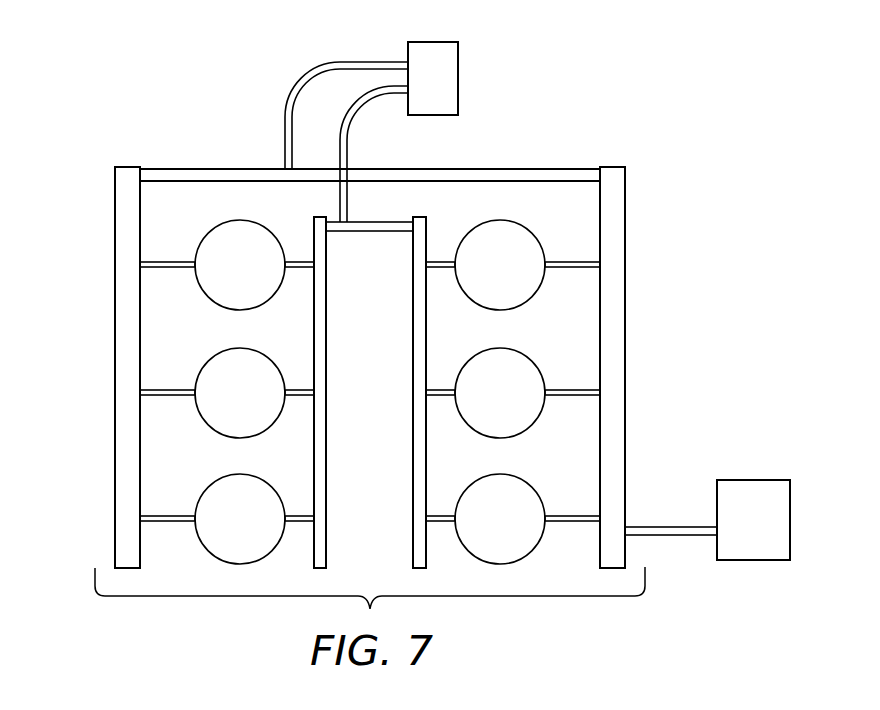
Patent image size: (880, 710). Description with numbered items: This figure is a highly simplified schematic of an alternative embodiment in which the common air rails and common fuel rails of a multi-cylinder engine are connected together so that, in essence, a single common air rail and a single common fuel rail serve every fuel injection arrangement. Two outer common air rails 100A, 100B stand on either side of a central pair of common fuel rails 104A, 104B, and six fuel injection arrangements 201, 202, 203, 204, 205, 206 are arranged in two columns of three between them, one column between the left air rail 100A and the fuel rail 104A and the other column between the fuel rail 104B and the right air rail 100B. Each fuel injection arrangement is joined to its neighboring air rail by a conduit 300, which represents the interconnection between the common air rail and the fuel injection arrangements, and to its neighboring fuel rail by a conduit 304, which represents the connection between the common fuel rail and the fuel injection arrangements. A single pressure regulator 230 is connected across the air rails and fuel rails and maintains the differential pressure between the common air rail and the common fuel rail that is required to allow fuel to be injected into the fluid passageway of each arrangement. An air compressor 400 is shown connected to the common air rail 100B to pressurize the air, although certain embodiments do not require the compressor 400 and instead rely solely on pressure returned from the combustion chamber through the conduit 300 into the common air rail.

The common air rail 100A is at (122, 312).
The common air rail 100B is at (625, 270).
The common fuel rail 104A is at (318, 423).
The common fuel rail 104B is at (411, 305).
The fuel injection arrangement 201 is at (258, 279).
The fuel injection arrangement 202 is at (258, 407).
The fuel injection arrangement 203 is at (258, 533).
The fuel injection arrangement 204 is at (518, 279).
The fuel injection arrangement 205 is at (518, 407).
The fuel injection arrangement 206 is at (518, 533).
The pressure regulator 230 is at (449, 71).
The conduit 300 is at (168, 271).
The conduit 304 is at (297, 271).
The air compressor 400 is at (771, 536).